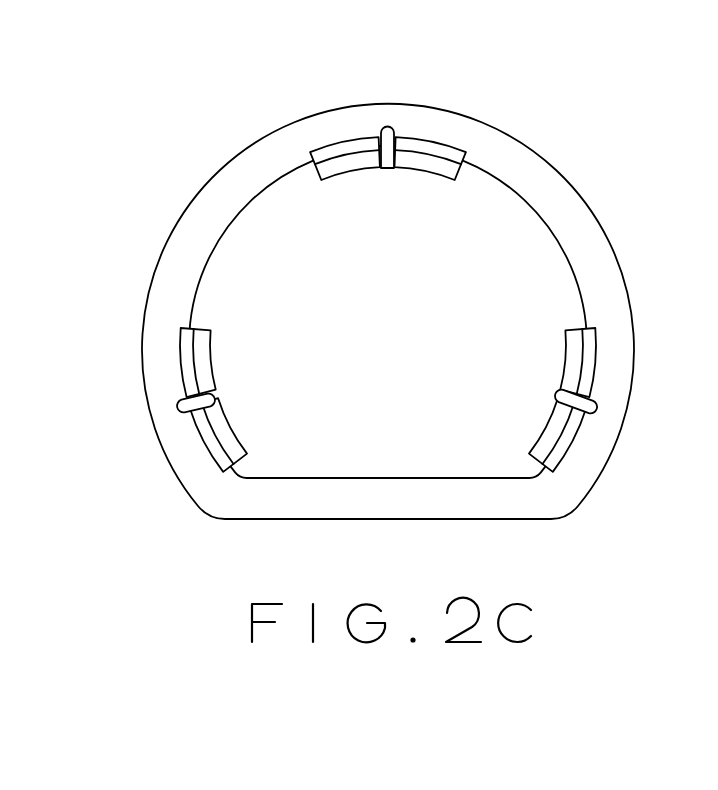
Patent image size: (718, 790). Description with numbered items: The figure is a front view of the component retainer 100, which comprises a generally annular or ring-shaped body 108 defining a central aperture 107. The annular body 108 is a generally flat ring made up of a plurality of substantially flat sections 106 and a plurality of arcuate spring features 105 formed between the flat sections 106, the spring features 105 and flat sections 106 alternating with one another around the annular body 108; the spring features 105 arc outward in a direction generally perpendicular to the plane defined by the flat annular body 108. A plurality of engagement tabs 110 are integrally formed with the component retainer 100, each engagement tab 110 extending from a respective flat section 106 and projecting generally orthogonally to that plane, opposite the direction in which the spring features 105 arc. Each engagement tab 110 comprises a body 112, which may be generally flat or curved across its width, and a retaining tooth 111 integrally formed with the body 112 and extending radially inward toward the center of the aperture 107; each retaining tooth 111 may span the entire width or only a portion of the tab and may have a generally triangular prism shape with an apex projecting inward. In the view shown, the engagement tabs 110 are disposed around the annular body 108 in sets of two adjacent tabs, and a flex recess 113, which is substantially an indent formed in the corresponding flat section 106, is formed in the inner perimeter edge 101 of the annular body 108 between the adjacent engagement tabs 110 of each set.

The component retainer 100 is at (180, 130).
The inner perimeter edge 101 is at (540, 224).
The arcuate spring feature 105 is at (210, 215).
The substantially flat section 106 is at (523, 160).
The central aperture 107 is at (363, 412).
The annular body 108 is at (583, 183).
The engagement tab 110 is at (413, 172).
The retaining tooth 111 is at (320, 177).
The body 112 is at (341, 142).
The flex recess 113 is at (391, 133).